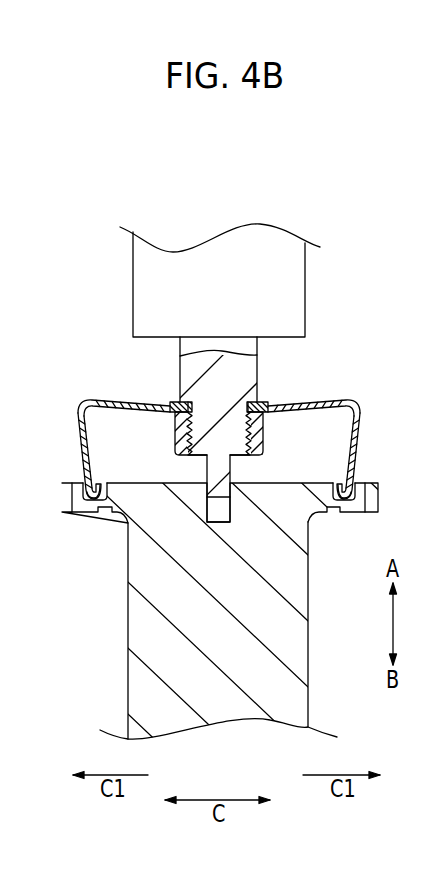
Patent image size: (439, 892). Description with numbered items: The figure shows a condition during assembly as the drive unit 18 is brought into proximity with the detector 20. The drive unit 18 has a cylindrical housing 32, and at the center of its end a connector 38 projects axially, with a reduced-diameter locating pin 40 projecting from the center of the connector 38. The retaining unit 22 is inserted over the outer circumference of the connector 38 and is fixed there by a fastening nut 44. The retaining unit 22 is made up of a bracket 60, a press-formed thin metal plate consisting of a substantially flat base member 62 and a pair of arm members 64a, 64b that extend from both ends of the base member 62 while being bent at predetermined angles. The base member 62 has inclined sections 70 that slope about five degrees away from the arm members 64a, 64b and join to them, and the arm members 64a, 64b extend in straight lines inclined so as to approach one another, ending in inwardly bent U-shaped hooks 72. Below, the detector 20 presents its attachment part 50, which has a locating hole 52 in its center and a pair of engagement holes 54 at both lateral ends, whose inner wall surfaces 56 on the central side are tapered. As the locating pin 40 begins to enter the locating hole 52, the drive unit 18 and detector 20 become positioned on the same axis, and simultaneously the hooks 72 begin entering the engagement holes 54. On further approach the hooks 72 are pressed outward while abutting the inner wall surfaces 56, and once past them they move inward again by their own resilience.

The drive unit 18 is at (230, 280).
The housing 32 is at (150, 285).
The connector 38 is at (193, 373).
The locating pin 40 is at (210, 435).
The fastening nut 44 is at (264, 436).
The base member 62 is at (260, 401).
The retaining unit 22 is at (221, 417).
The bracket 60 is at (221, 417).
The inclined sections 70 is at (110, 409).
The arm member 64a is at (81, 456).
The arm member 64b is at (376, 456).
The hooks 72 is at (103, 484).
The inner wall surfaces 56 is at (338, 485).
The attachment part 50 is at (206, 497).
The engagement holes 54 is at (88, 505).
The locating hole 52 is at (221, 510).
The detector 20 is at (116, 630).